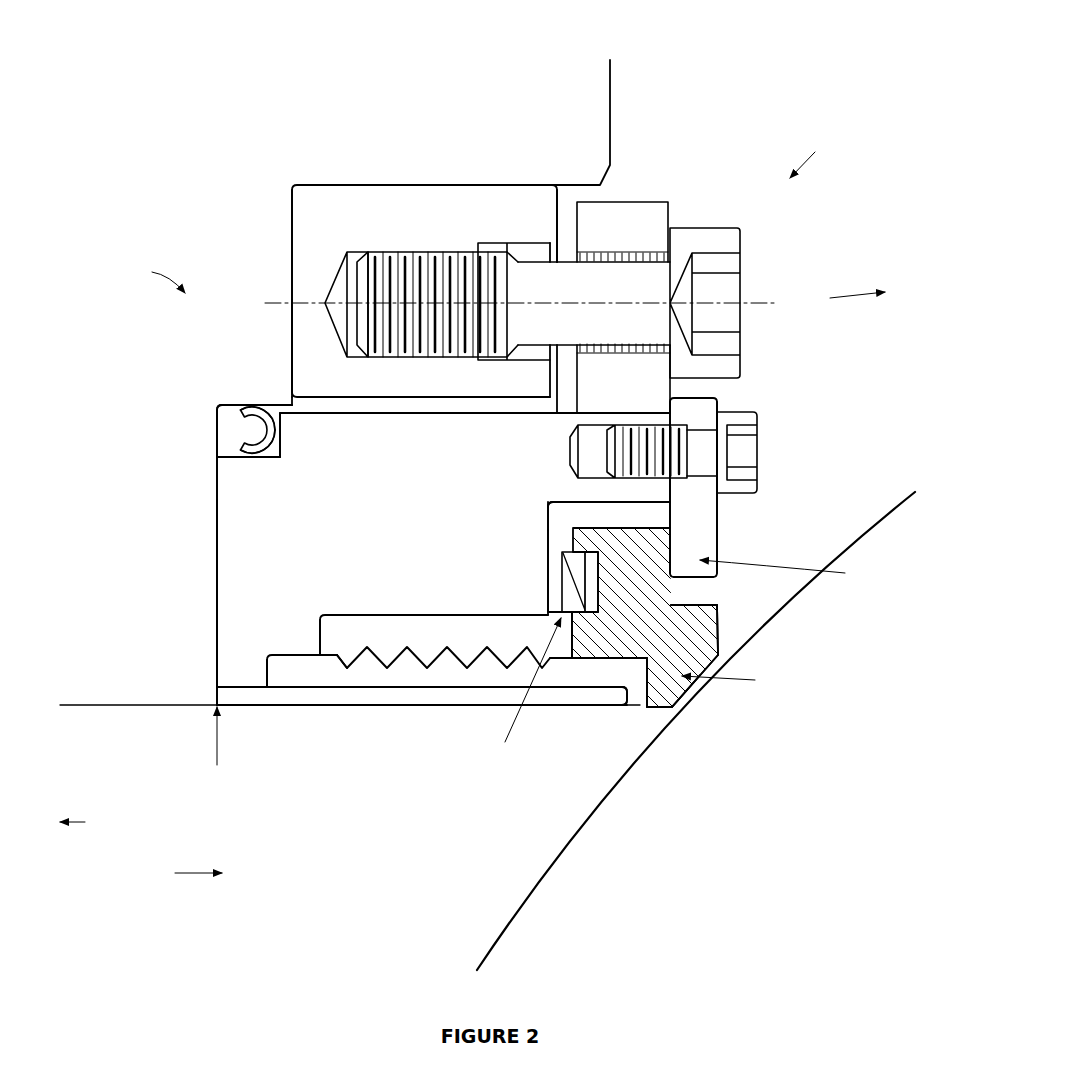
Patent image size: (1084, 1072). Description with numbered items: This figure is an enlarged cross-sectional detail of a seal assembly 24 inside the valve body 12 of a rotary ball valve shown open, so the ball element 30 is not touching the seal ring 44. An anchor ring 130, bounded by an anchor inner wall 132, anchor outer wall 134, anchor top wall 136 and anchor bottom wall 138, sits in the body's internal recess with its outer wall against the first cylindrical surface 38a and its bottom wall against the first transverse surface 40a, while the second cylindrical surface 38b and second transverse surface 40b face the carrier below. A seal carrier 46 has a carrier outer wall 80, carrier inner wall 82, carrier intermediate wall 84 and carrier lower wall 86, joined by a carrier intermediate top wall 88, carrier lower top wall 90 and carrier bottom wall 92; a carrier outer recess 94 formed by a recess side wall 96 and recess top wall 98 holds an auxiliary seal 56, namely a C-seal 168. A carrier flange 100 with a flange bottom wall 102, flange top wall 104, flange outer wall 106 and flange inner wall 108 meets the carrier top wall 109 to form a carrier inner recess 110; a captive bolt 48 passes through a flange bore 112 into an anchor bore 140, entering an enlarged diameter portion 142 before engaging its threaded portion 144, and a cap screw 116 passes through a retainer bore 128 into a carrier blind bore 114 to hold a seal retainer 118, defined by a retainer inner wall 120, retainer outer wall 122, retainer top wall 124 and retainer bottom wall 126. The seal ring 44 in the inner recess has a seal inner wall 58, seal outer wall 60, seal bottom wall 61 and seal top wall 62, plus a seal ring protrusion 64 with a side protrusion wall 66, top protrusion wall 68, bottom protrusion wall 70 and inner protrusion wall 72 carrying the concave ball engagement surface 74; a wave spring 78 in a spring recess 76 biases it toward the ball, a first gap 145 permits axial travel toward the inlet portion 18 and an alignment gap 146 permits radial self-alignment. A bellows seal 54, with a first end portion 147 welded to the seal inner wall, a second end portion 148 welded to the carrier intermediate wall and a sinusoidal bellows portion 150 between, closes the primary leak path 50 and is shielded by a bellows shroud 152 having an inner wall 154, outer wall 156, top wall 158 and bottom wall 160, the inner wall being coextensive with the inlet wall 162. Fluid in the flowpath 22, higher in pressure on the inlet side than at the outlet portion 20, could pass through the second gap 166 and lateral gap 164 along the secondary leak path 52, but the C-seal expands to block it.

The valve body 12 is at (155, 273).
The inlet portion 18 is at (87, 824).
The outlet portion 20 is at (842, 298).
The flowpath 22 is at (182, 872).
The seal assembly 24 is at (815, 155).
The ball element 30 is at (520, 903).
The first cylindrical surface 38a is at (386, 185).
The second cylindrical surface 38b is at (260, 405).
The first transverse surface 40a is at (290, 213).
The second transverse surface 40b is at (216, 540).
The seal ring 44 is at (706, 688).
The seal carrier 46 is at (376, 522).
The captive bolt 48 is at (742, 240).
The primary leak path 50 is at (577, 660).
The secondary leak path 52 is at (216, 746).
The bellows seal 54 is at (460, 690).
The auxiliary seal 56 is at (238, 440).
The seal inner wall 58 is at (640, 707).
The seal outer wall 60 is at (550, 505).
The seal bottom wall 61 is at (545, 518).
The seal top wall 62 is at (673, 585).
The seal ring protrusion 64 is at (694, 716).
The side protrusion wall 66 is at (716, 605).
The top protrusion wall 68 is at (720, 640).
The bottom protrusion wall 70 is at (652, 722).
The inner protrusion wall 72 is at (663, 713).
The ball engagement surface 74 is at (733, 679).
The spring recess 76 is at (585, 598).
The wave spring 78 is at (563, 575).
The carrier outer wall 80 is at (374, 413).
The carrier inner wall 82 is at (430, 616).
The carrier intermediate wall 84 is at (290, 655).
The carrier lower wall 86 is at (259, 688).
The carrier intermediate top wall 88 is at (321, 632).
The carrier lower top wall 90 is at (270, 676).
The carrier bottom wall 92 is at (217, 592).
The carrier outer recess 94 is at (235, 415).
The recess side wall 96 is at (232, 458).
The recess top wall 98 is at (278, 437).
The carrier flange 100 is at (690, 235).
The flange bottom wall 102 is at (575, 215).
The flange top wall 104 is at (680, 382).
The flange outer wall 106 is at (648, 203).
The flange inner wall 108 is at (562, 503).
The carrier top wall 109 is at (552, 540).
The carrier inner recess 110 is at (672, 520).
The flange bore 112 is at (672, 255).
The carrier blind bore 114 is at (600, 425).
The cap screw 116 is at (745, 432).
The seal retainer 118 is at (790, 572).
The retainer inner wall 120 is at (718, 580).
The retainer outer wall 122 is at (690, 410).
The retainer top wall 124 is at (718, 523).
The retainer bottom wall 126 is at (665, 490).
The retainer bore 128 is at (700, 486).
The anchor ring 130 is at (437, 253).
The anchor inner wall 132 is at (478, 398).
The anchor outer wall 134 is at (450, 188).
The anchor top wall 136 is at (558, 240).
The anchor bottom wall 138 is at (296, 372).
The anchor bore 140 is at (430, 250).
The enlarged diameter portion 142 is at (503, 243).
The threaded portion 144 is at (355, 250).
The first gap 145 is at (520, 690).
The alignment gap 146 is at (666, 548).
The first end portion 147 is at (593, 658).
The second end portion 148 is at (335, 665).
The sinusoidal bellows portion 150 is at (366, 655).
The bellows shroud 152 is at (375, 695).
The inner wall 154 is at (305, 706).
The outer wall 156 is at (415, 690).
The top wall 158 is at (624, 698).
The bottom wall 160 is at (216, 690).
The inlet wall 162 is at (97, 708).
The lateral gap 164 is at (430, 413).
The second gap 166 is at (215, 710).
The C-seal 168 is at (232, 458).